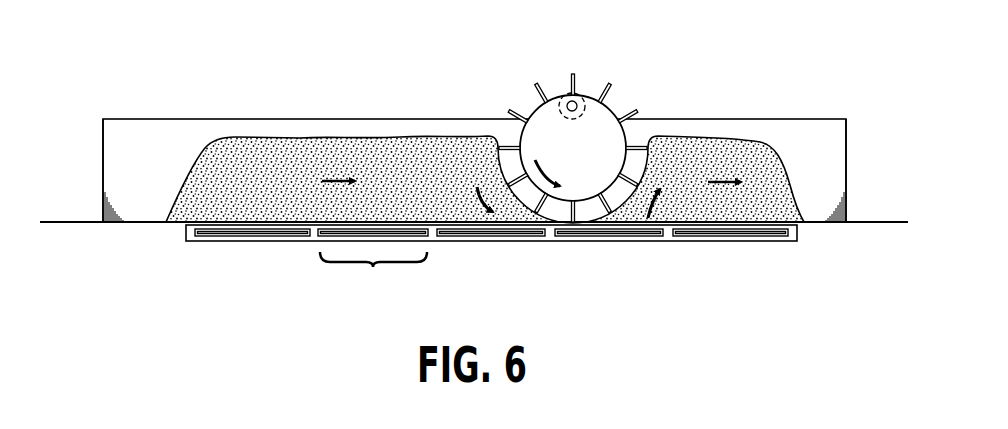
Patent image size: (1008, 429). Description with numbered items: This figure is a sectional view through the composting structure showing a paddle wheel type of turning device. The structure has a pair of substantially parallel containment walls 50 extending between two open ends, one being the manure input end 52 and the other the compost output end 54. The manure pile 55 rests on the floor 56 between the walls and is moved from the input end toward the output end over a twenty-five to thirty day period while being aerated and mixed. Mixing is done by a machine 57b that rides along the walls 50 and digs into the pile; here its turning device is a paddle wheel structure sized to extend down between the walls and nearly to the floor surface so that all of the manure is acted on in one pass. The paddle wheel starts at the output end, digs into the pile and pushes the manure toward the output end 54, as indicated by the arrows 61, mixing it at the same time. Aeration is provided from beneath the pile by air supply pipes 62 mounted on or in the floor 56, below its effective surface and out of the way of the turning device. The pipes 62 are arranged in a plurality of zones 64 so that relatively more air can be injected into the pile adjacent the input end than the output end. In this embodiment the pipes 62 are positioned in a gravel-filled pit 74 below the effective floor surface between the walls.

The containment walls 50 is at (812, 127).
The manure input end 52 is at (117, 169).
The compost output end 54 is at (846, 168).
The manure pile 55 is at (290, 157).
The floor 56 is at (140, 224).
The machine 57b is at (612, 107).
The arrows 61 is at (480, 215).
The air supply pipes 62 is at (243, 236).
The zones 64 is at (373, 281).
The gravel-filled pit 74 is at (797, 230).